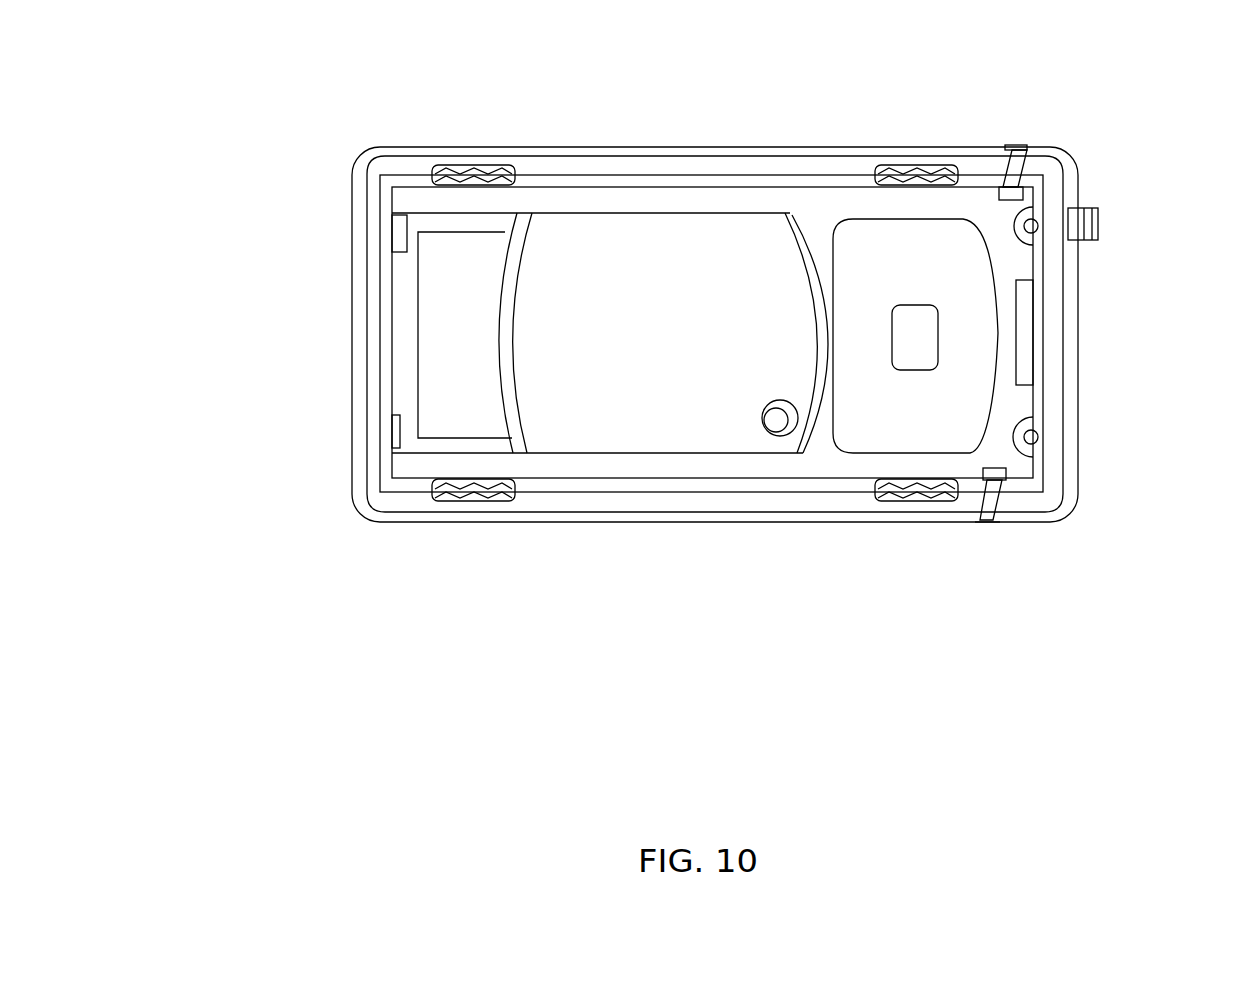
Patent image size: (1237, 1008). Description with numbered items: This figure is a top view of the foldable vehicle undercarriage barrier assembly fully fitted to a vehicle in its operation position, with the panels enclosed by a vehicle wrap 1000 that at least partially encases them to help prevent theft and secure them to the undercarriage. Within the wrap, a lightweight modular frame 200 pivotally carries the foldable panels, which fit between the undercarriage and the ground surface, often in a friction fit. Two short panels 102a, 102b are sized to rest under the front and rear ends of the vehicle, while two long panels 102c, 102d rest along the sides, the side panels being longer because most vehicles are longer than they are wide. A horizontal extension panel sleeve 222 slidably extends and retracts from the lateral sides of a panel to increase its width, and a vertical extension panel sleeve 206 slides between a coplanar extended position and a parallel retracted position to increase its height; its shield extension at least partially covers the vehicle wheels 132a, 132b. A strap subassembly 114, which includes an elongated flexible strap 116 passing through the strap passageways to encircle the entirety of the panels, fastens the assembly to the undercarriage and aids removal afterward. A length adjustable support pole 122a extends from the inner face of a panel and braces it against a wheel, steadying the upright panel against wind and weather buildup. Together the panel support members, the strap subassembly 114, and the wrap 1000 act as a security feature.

The vehicle wrap 1000 is at (1080, 177).
The short panel 102a is at (1045, 328).
The short panel 102b is at (315, 313).
The long panel 102c is at (765, 128).
The long panel 102d is at (668, 541).
The frame 200 is at (762, 495).
The horizontal extension panel sleeve 222 is at (615, 186).
The vertical extension panel sleeve 206 is at (1045, 407).
The wheel 132a is at (930, 166).
The wheel 132b is at (905, 501).
The strap 116 is at (1018, 152).
The strap subassembly 114 is at (990, 523).
The support pole 122a is at (1098, 224).